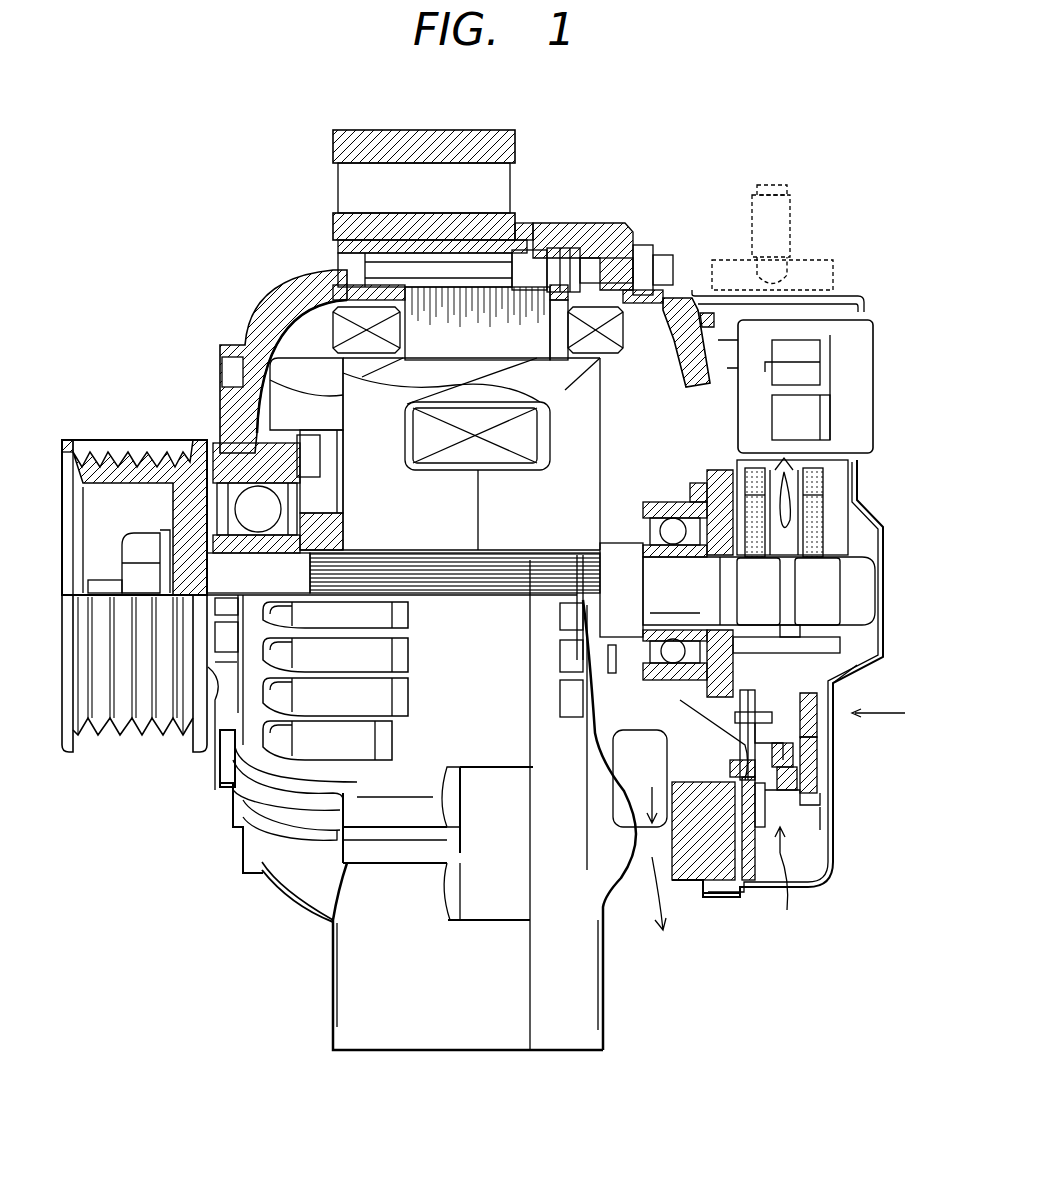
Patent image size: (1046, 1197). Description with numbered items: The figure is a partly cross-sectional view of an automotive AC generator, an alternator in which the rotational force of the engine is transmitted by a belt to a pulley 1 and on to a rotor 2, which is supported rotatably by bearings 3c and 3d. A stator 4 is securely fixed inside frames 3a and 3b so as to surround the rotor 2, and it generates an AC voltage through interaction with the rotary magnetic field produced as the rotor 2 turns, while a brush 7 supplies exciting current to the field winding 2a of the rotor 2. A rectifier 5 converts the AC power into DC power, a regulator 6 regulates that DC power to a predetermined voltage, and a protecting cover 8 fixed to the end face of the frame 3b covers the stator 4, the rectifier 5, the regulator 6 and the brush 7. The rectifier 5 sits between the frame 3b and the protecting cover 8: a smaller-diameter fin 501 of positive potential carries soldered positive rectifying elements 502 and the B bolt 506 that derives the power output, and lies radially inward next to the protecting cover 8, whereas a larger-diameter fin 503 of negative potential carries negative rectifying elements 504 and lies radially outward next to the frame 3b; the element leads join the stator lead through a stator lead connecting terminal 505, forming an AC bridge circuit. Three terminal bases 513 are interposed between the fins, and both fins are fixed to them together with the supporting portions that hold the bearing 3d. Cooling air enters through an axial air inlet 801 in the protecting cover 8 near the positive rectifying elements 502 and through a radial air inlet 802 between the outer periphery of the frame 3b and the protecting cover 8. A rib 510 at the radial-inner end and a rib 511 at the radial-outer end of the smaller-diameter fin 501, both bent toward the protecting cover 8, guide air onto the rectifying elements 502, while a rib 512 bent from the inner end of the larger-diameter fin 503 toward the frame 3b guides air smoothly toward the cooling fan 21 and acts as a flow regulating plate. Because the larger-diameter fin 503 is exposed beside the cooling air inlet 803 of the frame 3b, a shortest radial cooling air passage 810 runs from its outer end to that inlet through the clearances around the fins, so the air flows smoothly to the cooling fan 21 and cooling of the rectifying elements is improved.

The pulley 1 is at (118, 450).
The rotor 2 is at (238, 345).
The field winding 2a is at (355, 400).
The frame 3a is at (528, 232).
The frame 3b is at (613, 227).
The bearing 3c is at (255, 497).
The bearing 3d is at (655, 492).
The stator 4 is at (471, 340).
The rectifier 5 is at (803, 857).
The regulator 6 is at (865, 340).
The brush 7 is at (823, 460).
The protecting cover 8 is at (815, 880).
The cooling fan 21 is at (620, 753).
The smaller-diameter fin 501 is at (815, 790).
The positive rectifying elements 502 is at (787, 723).
The larger-diameter fin 503 is at (760, 873).
The negative rectifying elements 504 is at (765, 880).
The stator lead connecting terminal 505 is at (812, 820).
The B bolt 506 is at (797, 223).
The rib 510 is at (835, 675).
The rib 511 is at (820, 840).
The rib 512 is at (740, 742).
The terminal bases 513 is at (812, 767).
The axial air inlet 801 is at (830, 713).
The radial air inlet 802 is at (727, 893).
The cooling air inlet 803 is at (693, 723).
The radial cooling air passage 810 is at (700, 823).